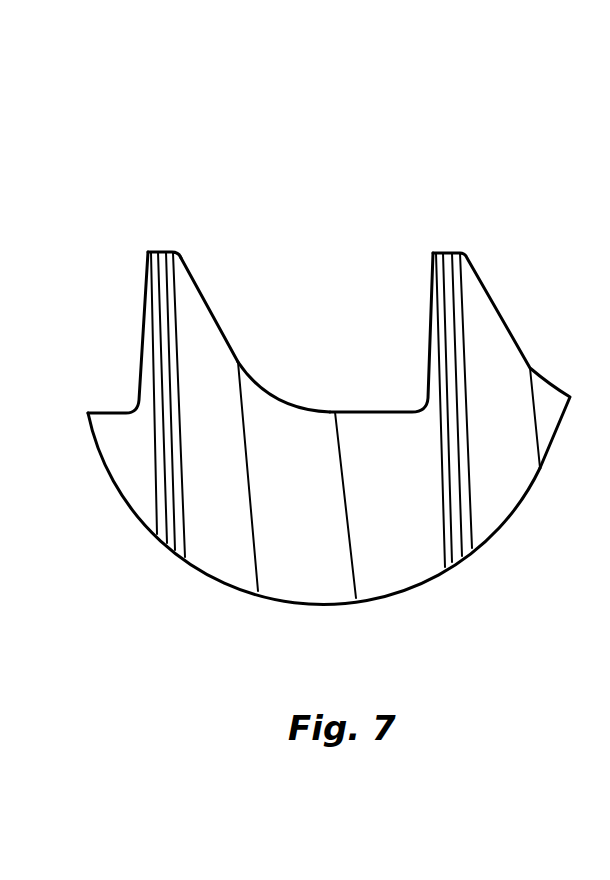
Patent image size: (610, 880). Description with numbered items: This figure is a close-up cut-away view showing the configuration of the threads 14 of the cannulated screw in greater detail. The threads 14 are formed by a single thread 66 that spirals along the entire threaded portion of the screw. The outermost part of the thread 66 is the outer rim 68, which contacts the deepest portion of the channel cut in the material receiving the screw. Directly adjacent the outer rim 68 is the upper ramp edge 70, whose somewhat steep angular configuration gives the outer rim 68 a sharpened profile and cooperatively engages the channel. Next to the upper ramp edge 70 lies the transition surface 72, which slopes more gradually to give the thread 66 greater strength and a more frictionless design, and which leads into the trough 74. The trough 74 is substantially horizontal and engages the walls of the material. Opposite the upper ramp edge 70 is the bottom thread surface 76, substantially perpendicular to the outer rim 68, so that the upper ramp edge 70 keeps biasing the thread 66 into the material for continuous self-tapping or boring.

The threads 14 is at (327, 207).
The thread 66 is at (169, 236).
The outer rim 68 is at (154, 255).
The upper ramp edge 70 is at (219, 308).
The transition surface 72 is at (291, 398).
The trough 74 is at (368, 410).
The bottom thread surface 76 is at (140, 325).